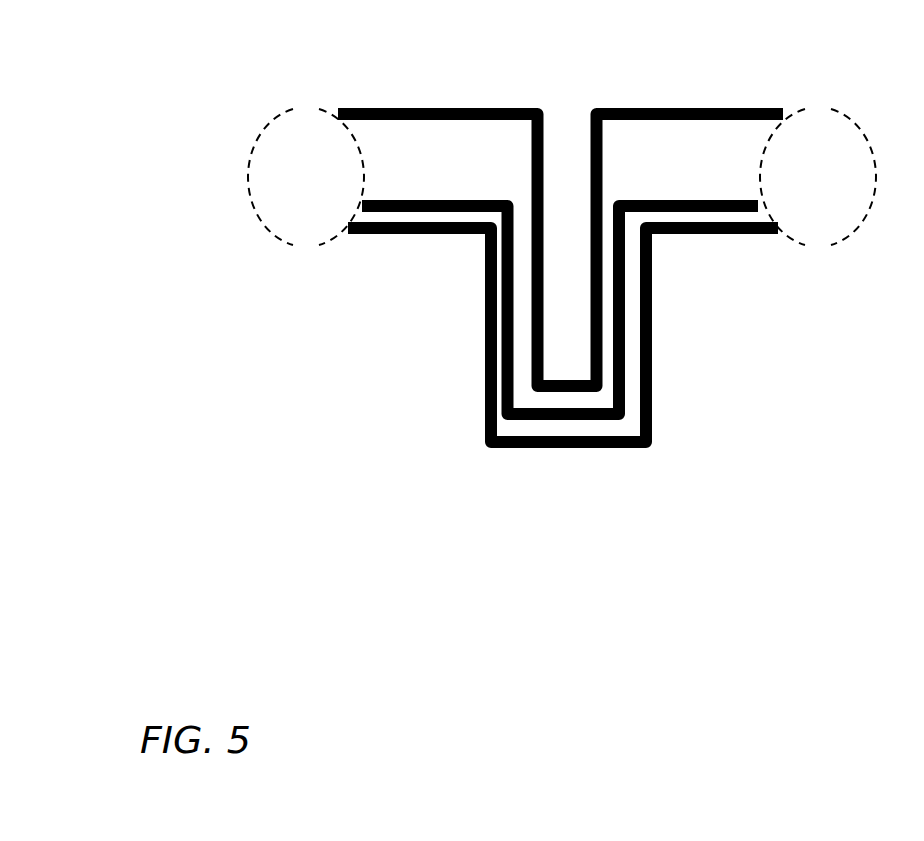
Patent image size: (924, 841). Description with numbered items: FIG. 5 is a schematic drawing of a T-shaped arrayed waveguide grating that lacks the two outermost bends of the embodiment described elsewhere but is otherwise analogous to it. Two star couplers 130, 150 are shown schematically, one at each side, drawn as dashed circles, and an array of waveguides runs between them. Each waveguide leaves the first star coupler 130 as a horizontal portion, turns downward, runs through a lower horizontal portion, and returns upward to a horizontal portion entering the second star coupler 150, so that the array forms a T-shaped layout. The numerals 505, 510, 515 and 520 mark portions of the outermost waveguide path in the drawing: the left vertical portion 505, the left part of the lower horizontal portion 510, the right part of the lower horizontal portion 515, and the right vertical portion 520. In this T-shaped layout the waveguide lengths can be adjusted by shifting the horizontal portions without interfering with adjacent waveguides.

The star coupler 130 is at (252, 78).
The star coupler 150 is at (872, 80).
The first trace segment 505 is at (478, 253).
The second trace segment 510 is at (478, 453).
The third trace segment 515 is at (652, 453).
The fourth trace segment 520 is at (665, 252).